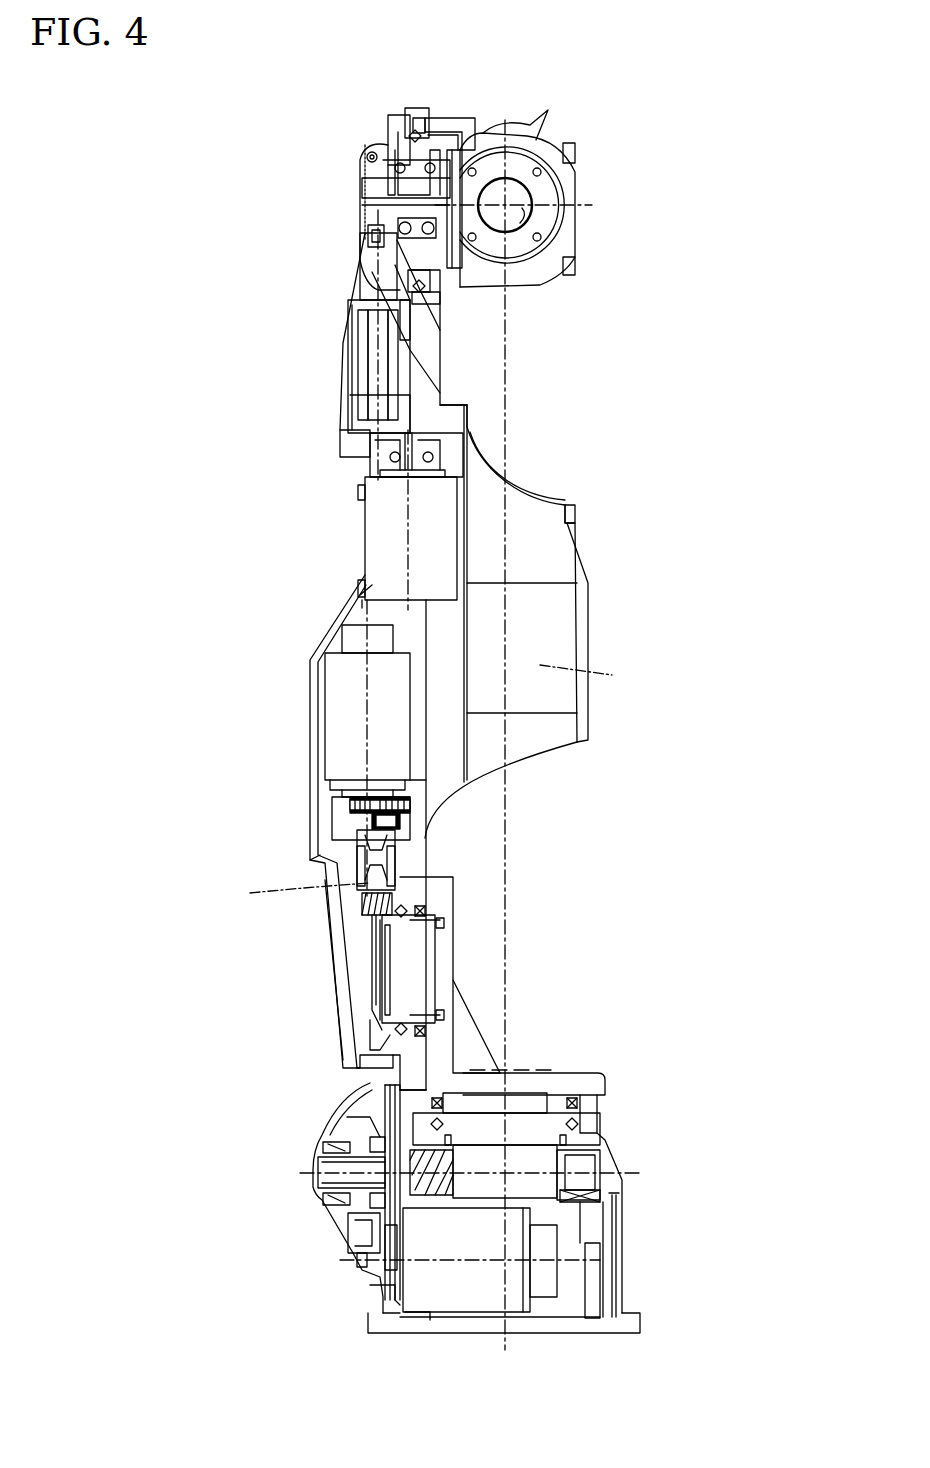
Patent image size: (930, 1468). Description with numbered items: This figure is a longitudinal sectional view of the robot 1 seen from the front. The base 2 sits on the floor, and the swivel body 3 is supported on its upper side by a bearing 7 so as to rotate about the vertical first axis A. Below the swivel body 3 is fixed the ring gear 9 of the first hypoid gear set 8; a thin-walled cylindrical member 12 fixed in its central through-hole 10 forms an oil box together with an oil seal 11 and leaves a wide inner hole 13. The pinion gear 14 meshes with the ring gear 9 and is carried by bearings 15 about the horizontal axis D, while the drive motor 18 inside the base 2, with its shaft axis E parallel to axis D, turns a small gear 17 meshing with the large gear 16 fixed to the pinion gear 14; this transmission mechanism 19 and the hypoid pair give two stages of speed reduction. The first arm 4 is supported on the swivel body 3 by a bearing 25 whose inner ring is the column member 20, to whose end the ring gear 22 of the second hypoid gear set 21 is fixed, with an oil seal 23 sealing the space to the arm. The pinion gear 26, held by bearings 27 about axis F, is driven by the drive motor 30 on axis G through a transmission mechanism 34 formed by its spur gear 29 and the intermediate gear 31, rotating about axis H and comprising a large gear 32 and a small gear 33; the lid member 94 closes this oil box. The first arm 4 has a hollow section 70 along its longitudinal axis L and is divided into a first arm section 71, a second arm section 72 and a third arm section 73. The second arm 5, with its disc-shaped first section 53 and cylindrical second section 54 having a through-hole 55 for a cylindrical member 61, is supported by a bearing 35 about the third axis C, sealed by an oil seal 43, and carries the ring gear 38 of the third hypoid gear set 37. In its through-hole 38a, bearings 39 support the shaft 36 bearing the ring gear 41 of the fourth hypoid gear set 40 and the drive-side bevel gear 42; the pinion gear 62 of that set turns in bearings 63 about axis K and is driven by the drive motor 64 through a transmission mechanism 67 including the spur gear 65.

The robot 1 is at (232, 150).
The base 2 is at (645, 1285).
The swivel body 3 is at (625, 1080).
The first arm 4 is at (296, 650).
The second arm 5 is at (452, 100).
The bearing 7 is at (600, 1118).
The first hypoid gear set 8 is at (462, 1162).
The ring gear 9 is at (600, 1165).
The through-hole 10 is at (546, 1146).
The oil seal 11 is at (598, 1197).
The cylindrical member 12 is at (618, 1177).
The inner hole 13 is at (588, 1208).
The pinion gear 14 is at (465, 1182).
The bearings 15 is at (372, 1110).
The large gear 16 is at (398, 1240).
The small gear 17 is at (375, 1278).
The drive motor 18 is at (430, 1318).
The transmission mechanism 19 is at (348, 1238).
The column member 20 is at (437, 958).
The second hypoid gear set 21 is at (356, 926).
The ring gear 22 is at (372, 1035).
The oil seal 23 is at (426, 912).
The bearing 25 is at (390, 1078).
The pinion gear 26 is at (360, 905).
The bearings 27 is at (398, 866).
The spur gear 29 is at (365, 803).
The drive motor 30 is at (325, 720).
The intermediate gear 31 is at (545, 785).
The large gear 32 is at (408, 806).
The small gear 33 is at (408, 826).
The transmission mechanism 34 is at (338, 836).
The bearing 35 is at (412, 118).
The shaft 36 is at (368, 194).
The third hypoid gear set 37 is at (442, 300).
The ring gear 38 is at (392, 118).
The through-hole 38a is at (370, 155).
The bearings 39 is at (425, 300).
The fourth hypoid gear set 40 is at (372, 256).
The ring gear 41 is at (393, 266).
The drive-side bevel gear 42 is at (480, 150).
The oil seal 43 is at (426, 118).
The first section 53 is at (470, 118).
The second section 54 is at (522, 135).
The through-hole 55 is at (525, 215).
The cylindrical member 61 is at (520, 252).
The pinion gear 62 is at (368, 243).
The bearings 63 is at (348, 313).
The drive motor 64 is at (368, 530).
The spur gear 65 is at (348, 413).
The transmission mechanism 67 is at (330, 432).
The hollow section 70 is at (545, 615).
The first arm section 71 is at (462, 400).
The second arm section 72 is at (345, 622).
The third arm section 73 is at (312, 835).
The lid member 94 is at (330, 988).
The first axis A is at (505, 1350).
The third axis C is at (578, 187).
The axis D is at (298, 1172).
The axis E is at (480, 1262).
The axis F is at (297, 893).
The axis G is at (367, 685).
The axis H is at (395, 775).
The axis K is at (376, 343).
The longitudinal axis L is at (505, 660).